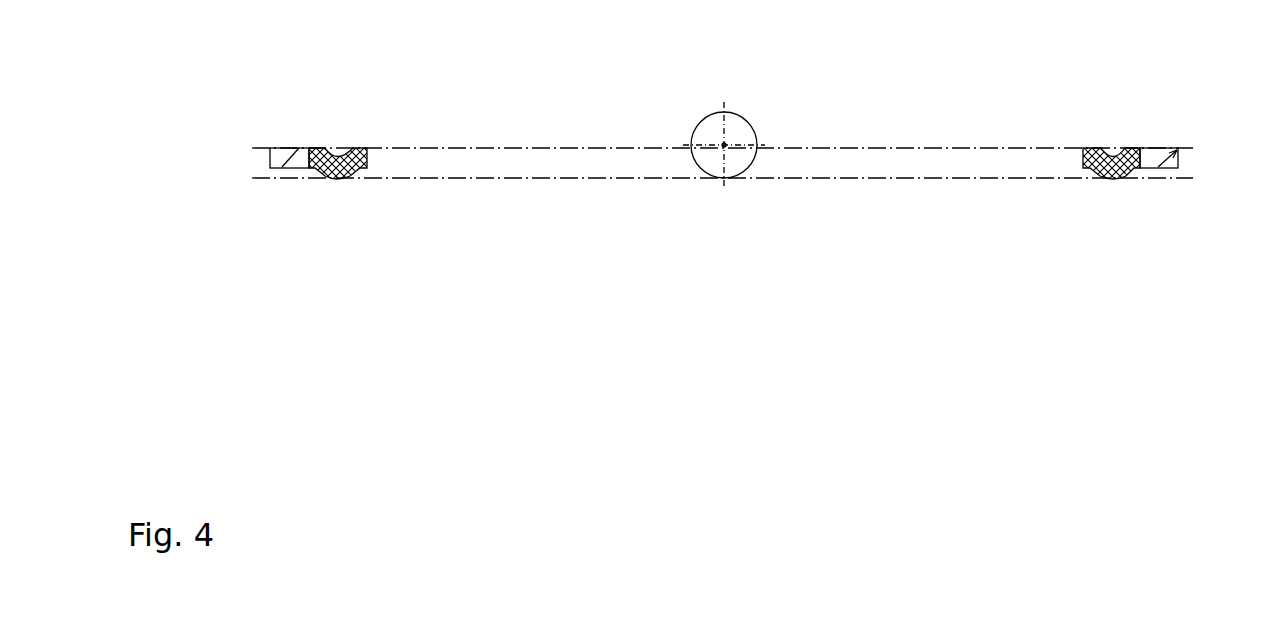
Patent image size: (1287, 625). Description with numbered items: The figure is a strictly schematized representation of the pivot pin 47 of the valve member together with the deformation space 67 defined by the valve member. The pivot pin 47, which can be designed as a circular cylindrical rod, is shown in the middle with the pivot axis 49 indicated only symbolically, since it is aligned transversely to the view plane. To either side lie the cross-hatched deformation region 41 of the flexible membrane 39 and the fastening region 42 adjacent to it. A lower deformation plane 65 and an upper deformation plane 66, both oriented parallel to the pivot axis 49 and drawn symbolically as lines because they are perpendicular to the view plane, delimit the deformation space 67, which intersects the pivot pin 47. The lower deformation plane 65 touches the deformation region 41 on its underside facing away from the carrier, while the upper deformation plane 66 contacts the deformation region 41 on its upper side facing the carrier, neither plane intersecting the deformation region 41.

The flexible membrane 39 is at (288, 149).
The deformation region 41 is at (352, 157).
The fastening region 42 is at (278, 161).
The pivot pin 47 is at (740, 128).
The pivot axis 49 is at (723, 144).
The lower deformation plane 65 is at (872, 179).
The upper deformation plane 66 is at (440, 147).
The deformation space 67 is at (934, 167).